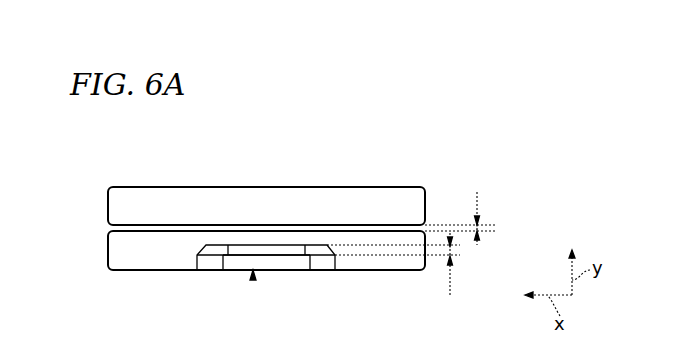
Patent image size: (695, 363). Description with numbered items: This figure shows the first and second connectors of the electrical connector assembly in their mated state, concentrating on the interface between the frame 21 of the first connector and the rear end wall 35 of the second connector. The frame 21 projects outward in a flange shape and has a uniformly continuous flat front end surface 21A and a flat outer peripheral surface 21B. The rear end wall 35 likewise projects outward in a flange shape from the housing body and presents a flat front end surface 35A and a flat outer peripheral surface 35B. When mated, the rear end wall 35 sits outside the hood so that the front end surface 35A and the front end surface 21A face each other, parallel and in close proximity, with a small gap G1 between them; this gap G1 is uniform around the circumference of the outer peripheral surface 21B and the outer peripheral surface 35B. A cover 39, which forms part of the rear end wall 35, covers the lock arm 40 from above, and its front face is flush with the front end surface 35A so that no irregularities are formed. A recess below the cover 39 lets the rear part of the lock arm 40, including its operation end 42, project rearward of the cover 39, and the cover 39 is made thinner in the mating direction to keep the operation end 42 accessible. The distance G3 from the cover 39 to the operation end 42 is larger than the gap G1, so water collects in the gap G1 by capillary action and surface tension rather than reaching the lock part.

The frame 21 is at (107, 203).
The front end surface of the frame 21A is at (188, 226).
The outer peripheral surface of the frame 21B is at (143, 208).
The rear end wall 35 is at (107, 249).
The front end surface of the rear end wall 35A is at (158, 229).
The outer peripheral surface of the rear end wall 35B is at (132, 253).
The cover 39 is at (210, 247).
The lock arm 40 is at (253, 279).
The operation end 42 is at (322, 262).
The gap G1 is at (494, 192).
The distance G3 is at (450, 297).